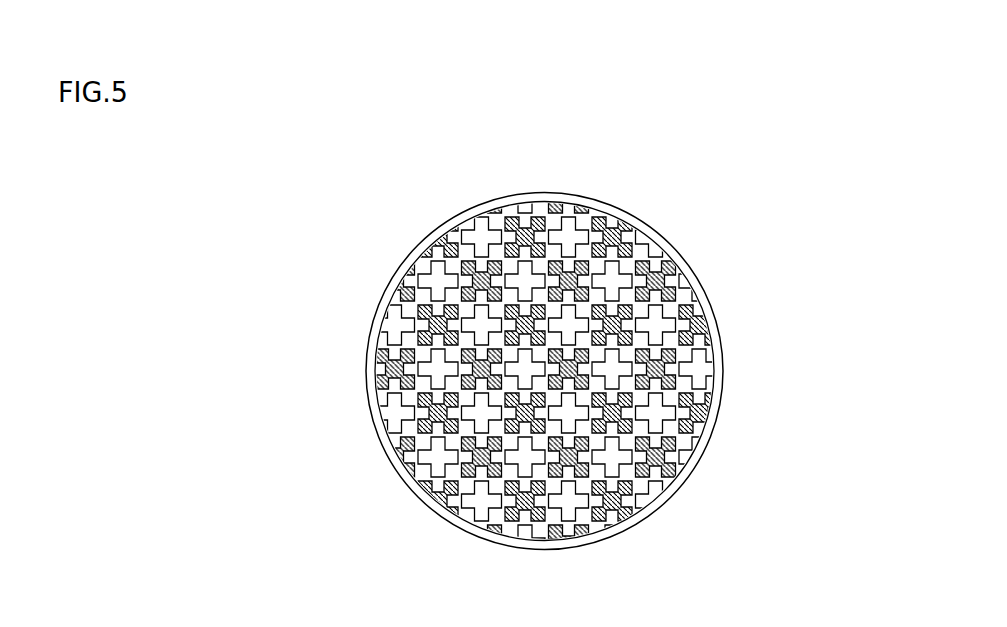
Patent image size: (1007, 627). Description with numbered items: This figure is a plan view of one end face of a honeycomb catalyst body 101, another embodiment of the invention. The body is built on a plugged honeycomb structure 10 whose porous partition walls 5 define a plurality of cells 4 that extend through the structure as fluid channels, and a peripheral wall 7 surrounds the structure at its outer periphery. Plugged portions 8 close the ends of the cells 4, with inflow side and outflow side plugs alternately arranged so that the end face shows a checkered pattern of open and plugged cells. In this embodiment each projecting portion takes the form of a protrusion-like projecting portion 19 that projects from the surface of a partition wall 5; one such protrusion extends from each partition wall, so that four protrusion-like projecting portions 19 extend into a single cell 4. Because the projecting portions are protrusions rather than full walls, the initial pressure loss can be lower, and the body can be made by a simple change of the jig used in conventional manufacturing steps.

The cell 4 is at (612, 282).
The partition wall 5 is at (678, 382).
The peripheral wall 7 is at (545, 200).
The plugged portion 8 is at (593, 482).
The plugged honeycomb structure 10 is at (720, 414).
The protrusion-like projecting portion 19 is at (670, 309).
The honeycomb catalyst body 101 is at (808, 157).